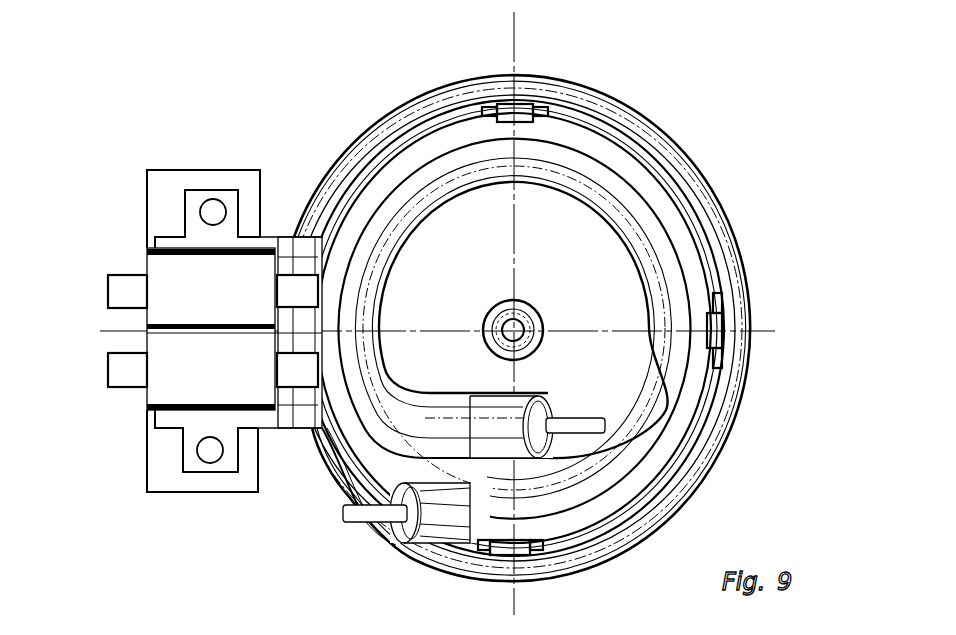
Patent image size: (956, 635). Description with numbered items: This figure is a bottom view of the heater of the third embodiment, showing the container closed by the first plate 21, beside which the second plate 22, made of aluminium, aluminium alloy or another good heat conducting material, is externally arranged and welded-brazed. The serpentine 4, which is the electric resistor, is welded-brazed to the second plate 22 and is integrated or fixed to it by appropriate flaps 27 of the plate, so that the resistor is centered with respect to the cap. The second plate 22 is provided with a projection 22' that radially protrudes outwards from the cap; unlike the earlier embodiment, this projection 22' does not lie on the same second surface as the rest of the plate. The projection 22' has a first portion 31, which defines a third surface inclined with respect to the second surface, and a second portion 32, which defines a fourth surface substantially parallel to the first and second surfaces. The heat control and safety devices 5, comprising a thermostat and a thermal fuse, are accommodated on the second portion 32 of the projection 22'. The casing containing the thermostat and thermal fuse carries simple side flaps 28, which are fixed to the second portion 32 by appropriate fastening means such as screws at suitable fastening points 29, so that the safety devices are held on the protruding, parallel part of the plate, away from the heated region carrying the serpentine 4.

The serpentine 4 is at (673, 395).
The heat control and safety devices 5 is at (138, 328).
The first plate 21 is at (717, 197).
The second plate 22 is at (514, 301).
The projection 22' is at (480, 360).
The flaps 27 is at (523, 106).
The side flaps 28 is at (190, 198).
The fastening points 29 is at (216, 208).
The first portion 31 is at (300, 258).
The second portion 32 is at (166, 182).